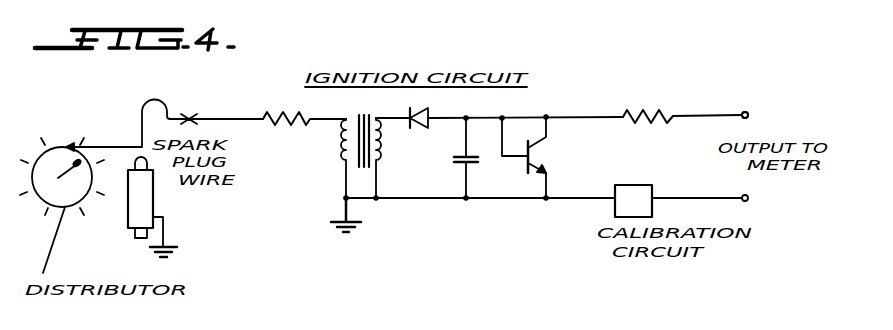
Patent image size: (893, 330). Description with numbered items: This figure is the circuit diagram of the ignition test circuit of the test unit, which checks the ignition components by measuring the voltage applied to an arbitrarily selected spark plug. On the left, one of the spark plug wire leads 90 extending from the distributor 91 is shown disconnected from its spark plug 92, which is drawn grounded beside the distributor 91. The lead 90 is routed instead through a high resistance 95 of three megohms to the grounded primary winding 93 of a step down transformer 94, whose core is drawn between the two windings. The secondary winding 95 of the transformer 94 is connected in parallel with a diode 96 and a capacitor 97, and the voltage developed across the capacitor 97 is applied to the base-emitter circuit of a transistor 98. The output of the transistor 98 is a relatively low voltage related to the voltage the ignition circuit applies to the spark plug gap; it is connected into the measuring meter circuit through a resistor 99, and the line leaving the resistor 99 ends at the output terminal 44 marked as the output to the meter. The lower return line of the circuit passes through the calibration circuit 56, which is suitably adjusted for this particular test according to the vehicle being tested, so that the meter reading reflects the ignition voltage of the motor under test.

The output to meter terminal 44 is at (750, 110).
The calibration circuit 56 is at (645, 210).
The spark plug wire lead 90 is at (127, 130).
The distributor 91 is at (70, 130).
The spark plug 92 is at (122, 217).
The primary winding 93 is at (338, 147).
The step down transformer 94 is at (365, 115).
The high resistance / secondary winding 95 is at (283, 127).
The diode 96 is at (412, 127).
The capacitor 97 is at (457, 160).
The transistor 98 is at (538, 158).
The resistor 99 is at (650, 108).